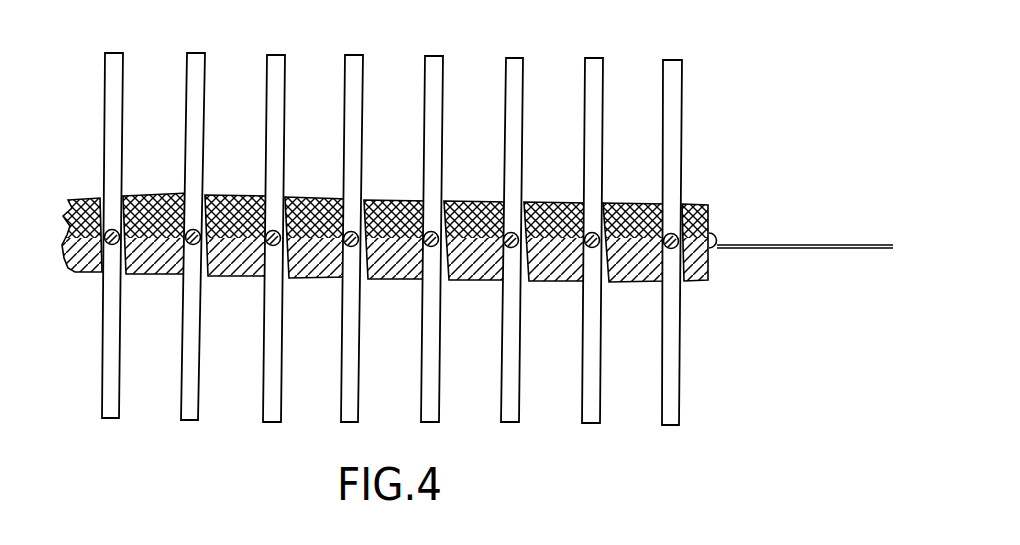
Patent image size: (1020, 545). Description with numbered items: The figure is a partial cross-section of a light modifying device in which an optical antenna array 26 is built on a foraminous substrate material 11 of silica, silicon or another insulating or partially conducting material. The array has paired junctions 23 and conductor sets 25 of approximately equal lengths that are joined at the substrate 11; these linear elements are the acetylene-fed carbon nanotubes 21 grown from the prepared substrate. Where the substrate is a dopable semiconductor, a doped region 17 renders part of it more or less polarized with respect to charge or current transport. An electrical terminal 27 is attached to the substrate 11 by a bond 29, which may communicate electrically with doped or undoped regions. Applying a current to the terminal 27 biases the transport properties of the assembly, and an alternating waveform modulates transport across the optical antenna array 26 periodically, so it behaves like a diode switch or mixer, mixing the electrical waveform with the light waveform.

The substrate material 11 is at (341, 222).
The doped region 17 is at (88, 193).
The carbon nanotubes 21 is at (418, 234).
The paired junctions 23 is at (690, 205).
The conductor sets 25 is at (684, 97).
The optical antenna array 26 is at (72, 228).
The electrical terminal 27 is at (870, 253).
The bond 29 is at (717, 250).